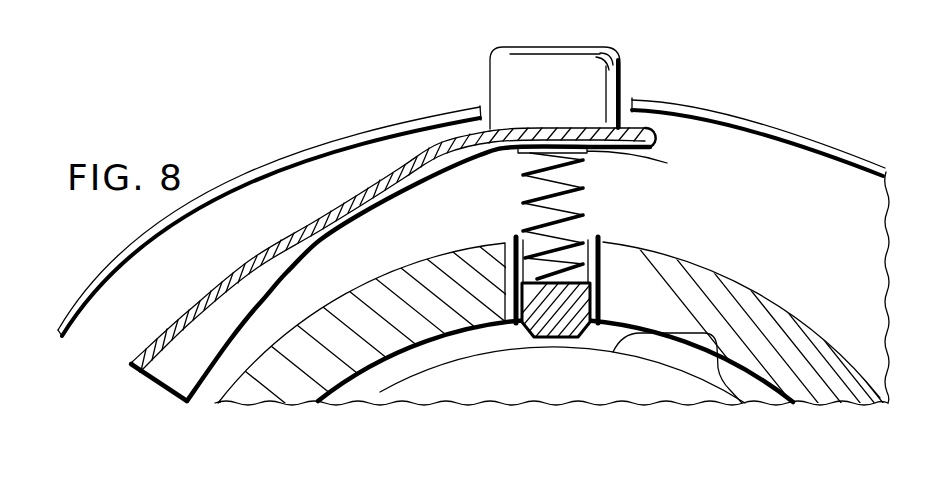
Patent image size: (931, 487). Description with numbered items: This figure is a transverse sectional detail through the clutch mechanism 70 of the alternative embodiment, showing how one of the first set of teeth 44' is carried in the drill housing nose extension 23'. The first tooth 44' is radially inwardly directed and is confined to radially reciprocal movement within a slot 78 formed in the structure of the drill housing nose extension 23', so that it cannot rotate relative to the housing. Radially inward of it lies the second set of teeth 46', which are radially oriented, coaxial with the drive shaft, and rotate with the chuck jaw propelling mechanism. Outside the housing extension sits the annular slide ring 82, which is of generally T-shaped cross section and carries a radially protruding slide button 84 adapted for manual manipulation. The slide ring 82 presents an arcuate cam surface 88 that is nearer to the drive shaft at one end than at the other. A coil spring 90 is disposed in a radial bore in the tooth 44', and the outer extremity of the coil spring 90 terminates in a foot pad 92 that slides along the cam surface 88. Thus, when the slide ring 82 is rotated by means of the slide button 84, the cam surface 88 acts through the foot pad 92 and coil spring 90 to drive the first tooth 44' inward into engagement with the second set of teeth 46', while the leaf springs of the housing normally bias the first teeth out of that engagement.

The drill housing nose extension 23' is at (471, 211).
The slide button 84 is at (597, 78).
The annular slide ring 82 is at (287, 233).
The arcuate cam surface 88 is at (228, 334).
The foot pad 92 is at (590, 143).
The coil spring 90 is at (590, 177).
The slot 78 is at (600, 243).
The clutch mechanism 70 is at (712, 206).
The second set of teeth 46' is at (560, 349).
The first set of teeth 44' is at (562, 340).